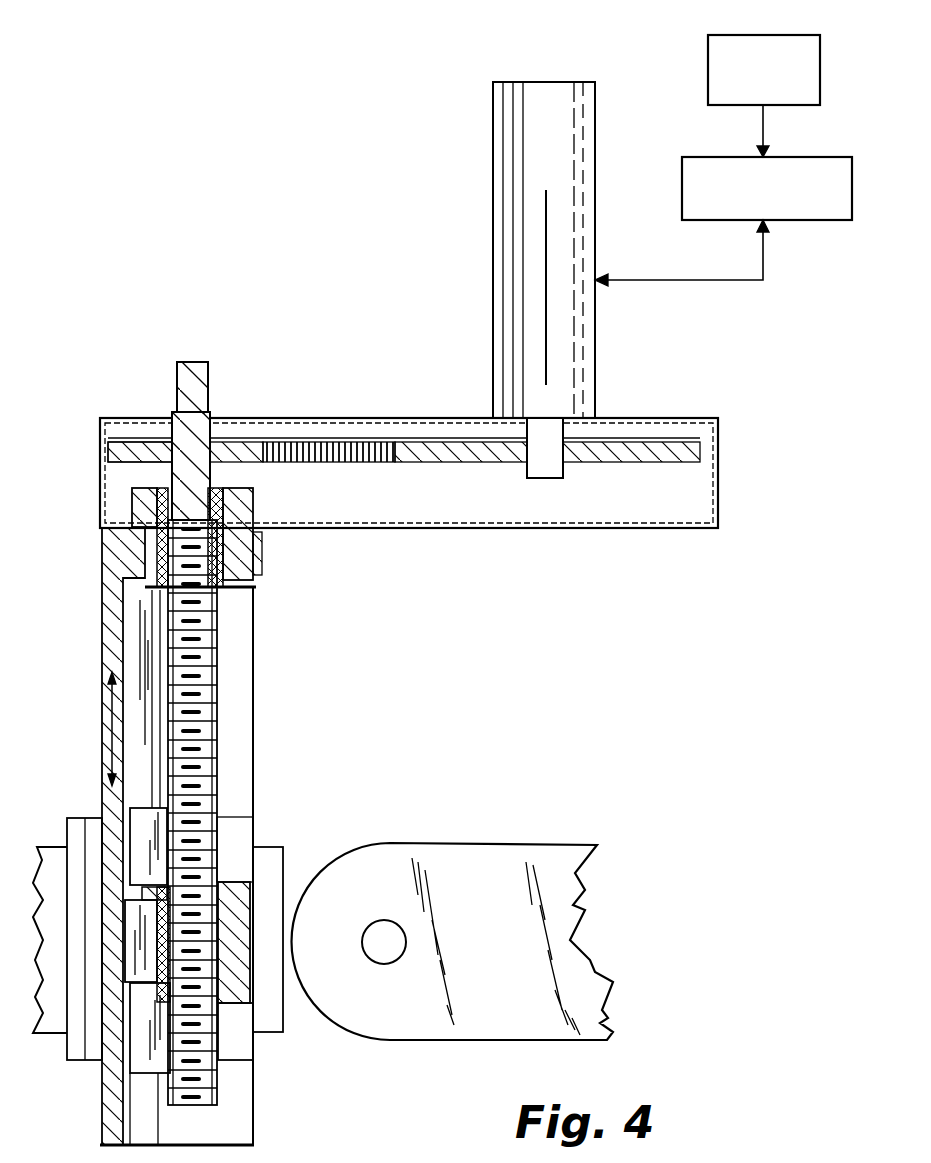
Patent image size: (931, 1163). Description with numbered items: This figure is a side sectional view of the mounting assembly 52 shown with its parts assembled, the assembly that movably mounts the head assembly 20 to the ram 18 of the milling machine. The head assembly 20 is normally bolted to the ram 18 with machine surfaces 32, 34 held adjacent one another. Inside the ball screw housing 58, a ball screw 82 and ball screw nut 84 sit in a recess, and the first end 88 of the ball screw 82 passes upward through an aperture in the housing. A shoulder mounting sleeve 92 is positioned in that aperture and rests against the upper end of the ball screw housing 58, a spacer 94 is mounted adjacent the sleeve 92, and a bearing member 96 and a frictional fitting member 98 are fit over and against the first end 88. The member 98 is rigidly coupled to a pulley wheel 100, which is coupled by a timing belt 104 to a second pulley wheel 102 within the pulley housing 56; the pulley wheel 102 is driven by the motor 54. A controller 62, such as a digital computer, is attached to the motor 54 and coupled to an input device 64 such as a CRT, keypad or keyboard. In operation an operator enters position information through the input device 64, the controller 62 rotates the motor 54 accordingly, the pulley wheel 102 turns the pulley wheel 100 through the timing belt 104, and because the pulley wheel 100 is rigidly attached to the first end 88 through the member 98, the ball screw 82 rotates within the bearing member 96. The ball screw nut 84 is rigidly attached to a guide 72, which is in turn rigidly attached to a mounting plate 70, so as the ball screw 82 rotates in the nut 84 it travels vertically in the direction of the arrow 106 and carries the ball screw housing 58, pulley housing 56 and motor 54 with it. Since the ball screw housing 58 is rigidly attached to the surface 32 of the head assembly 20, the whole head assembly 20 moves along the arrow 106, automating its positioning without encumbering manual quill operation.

The ram 18 is at (420, 843).
The head assembly 20 is at (47, 1045).
The machine surface 32 is at (66, 820).
The machine surface 34 is at (283, 1032).
The mounting assembly 52 is at (174, 344).
The motor 54 is at (596, 335).
The pulley housing 56 is at (573, 532).
The ball screw housing 58 is at (102, 650).
The controller 62 is at (682, 165).
The input device 64 is at (708, 52).
The mounting plate 70 is at (220, 1062).
The guide 72 is at (237, 897).
The ball screw 82 is at (217, 638).
The ball screw nut 84 is at (143, 890).
The first end 88 is at (184, 358).
The shoulder mounting sleeve 92 is at (232, 587).
The spacer 94 is at (253, 497).
The bearing member 96 is at (217, 485).
The frictional fitting member 98 is at (157, 452).
The pulley wheel 100 is at (230, 442).
The pulley wheel 102 is at (592, 465).
The timing belt 104 is at (300, 442).
The arrow 106 is at (100, 712).